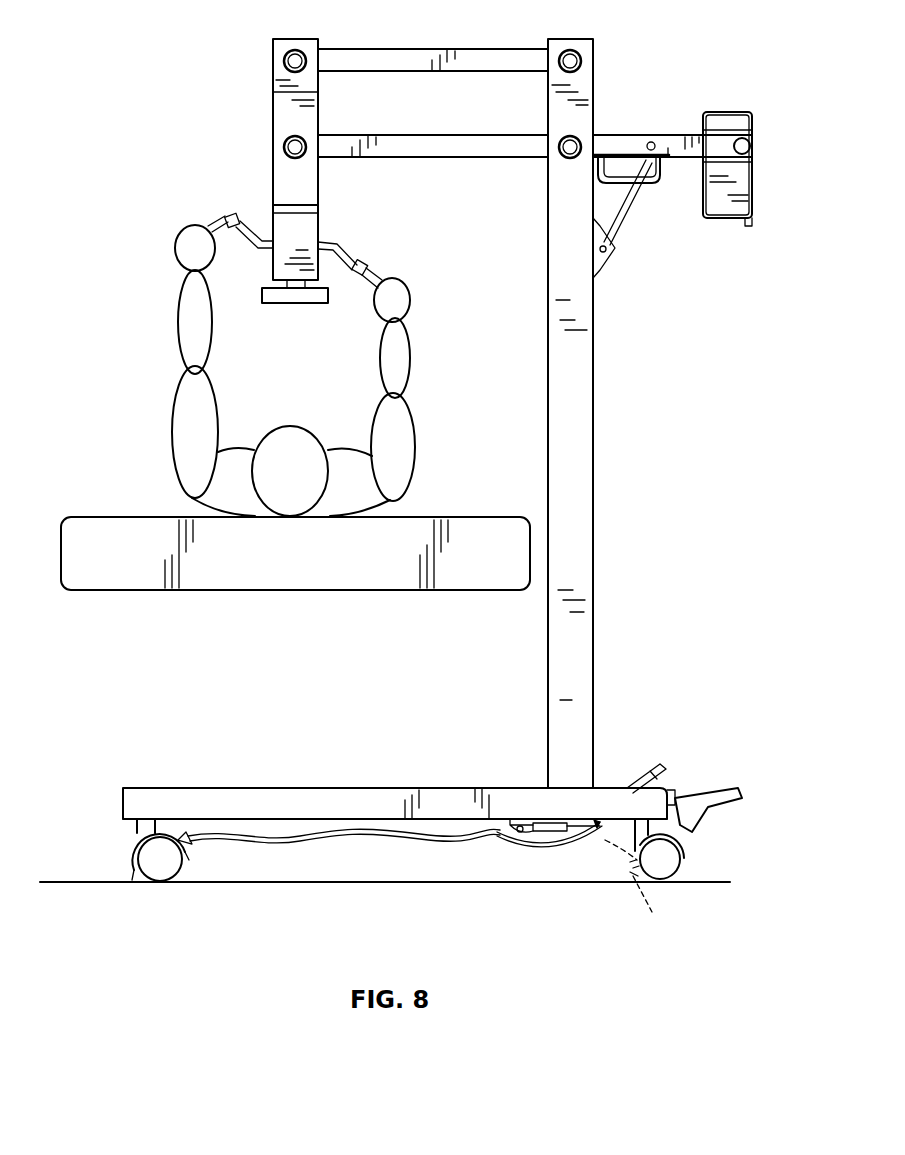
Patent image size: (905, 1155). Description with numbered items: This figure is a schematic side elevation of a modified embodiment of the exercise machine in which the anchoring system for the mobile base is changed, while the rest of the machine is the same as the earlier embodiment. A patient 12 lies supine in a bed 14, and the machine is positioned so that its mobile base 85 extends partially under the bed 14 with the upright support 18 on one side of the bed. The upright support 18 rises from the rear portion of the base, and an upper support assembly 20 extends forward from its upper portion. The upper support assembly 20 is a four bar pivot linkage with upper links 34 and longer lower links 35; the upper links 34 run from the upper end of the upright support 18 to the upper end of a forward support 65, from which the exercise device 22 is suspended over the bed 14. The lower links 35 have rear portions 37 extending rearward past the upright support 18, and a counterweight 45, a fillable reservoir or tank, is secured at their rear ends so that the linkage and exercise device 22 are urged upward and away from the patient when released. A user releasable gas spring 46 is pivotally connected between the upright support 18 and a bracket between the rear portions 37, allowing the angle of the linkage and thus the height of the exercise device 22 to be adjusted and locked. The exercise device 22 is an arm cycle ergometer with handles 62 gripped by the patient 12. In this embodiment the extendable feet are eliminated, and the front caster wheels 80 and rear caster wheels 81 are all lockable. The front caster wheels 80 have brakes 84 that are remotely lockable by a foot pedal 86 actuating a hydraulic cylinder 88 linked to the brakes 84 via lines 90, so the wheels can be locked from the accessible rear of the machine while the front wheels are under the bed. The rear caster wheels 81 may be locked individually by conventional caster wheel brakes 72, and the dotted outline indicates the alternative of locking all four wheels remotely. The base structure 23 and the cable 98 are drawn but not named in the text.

The patient 12 is at (402, 450).
The bed 14 is at (110, 516).
The upright support 18 is at (583, 455).
The upper support assembly 20 is at (407, 38).
The exercise device 22 is at (312, 220).
The base 23 is at (235, 798).
The upper links 34 is at (485, 71).
The lower links 35 is at (487, 157).
The rear portions 37 is at (615, 135).
The counterweight 45 is at (745, 120).
The gas spring 46 is at (632, 195).
The handles 62 is at (373, 265).
The forward support 65 is at (273, 112).
The caster wheel brakes 72 is at (712, 797).
The front caster wheels 80 is at (132, 853).
The rear caster wheels 81 is at (672, 858).
The brakes 84 is at (186, 834).
The mobile base 85 is at (434, 783).
The foot pedal 86 is at (663, 768).
The hydraulic cylinder 88 is at (548, 840).
The lines 90 is at (605, 856).
The cable 98 is at (480, 838).